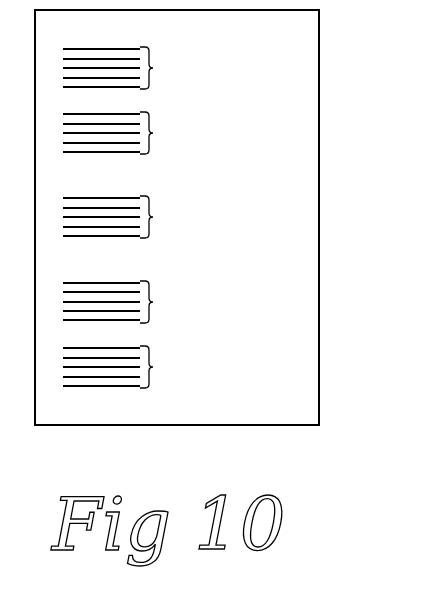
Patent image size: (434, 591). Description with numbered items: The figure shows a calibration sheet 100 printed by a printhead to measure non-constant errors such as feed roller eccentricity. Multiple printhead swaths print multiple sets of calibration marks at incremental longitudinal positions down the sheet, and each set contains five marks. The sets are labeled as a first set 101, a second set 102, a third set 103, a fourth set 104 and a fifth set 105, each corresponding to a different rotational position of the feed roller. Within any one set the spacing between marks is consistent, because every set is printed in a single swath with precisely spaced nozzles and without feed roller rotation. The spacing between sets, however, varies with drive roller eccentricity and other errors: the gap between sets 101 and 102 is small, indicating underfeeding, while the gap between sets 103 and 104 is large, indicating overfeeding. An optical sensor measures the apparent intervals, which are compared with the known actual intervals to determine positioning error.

The calibration sheet 100 is at (302, 78).
The first set of calibration marks 101 is at (153, 68).
The second set of calibration marks 102 is at (153, 133).
The third set of calibration marks 103 is at (153, 217).
The fourth set of calibration marks 104 is at (153, 302).
The fifth set of calibration marks 105 is at (153, 367).